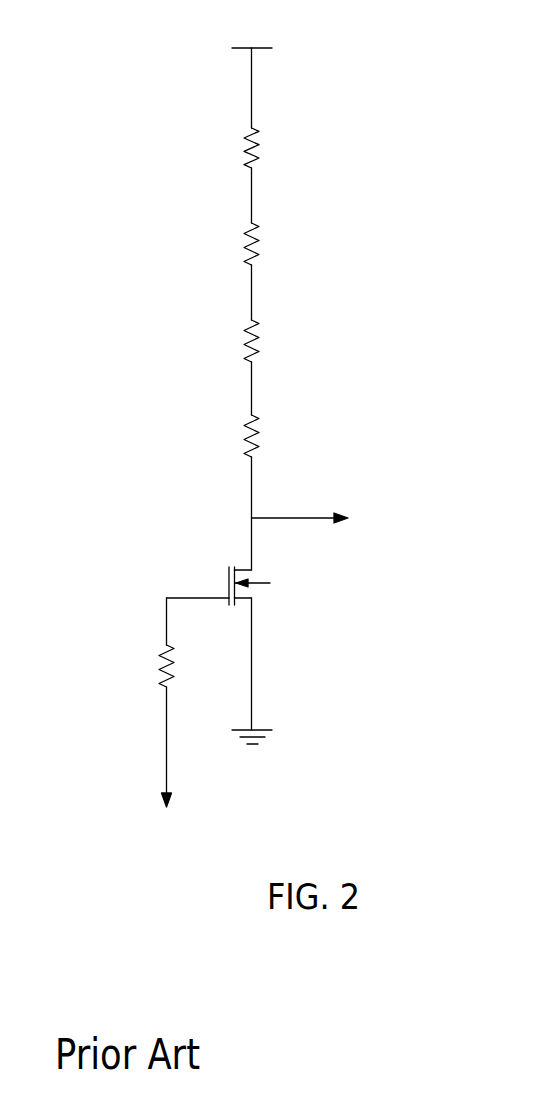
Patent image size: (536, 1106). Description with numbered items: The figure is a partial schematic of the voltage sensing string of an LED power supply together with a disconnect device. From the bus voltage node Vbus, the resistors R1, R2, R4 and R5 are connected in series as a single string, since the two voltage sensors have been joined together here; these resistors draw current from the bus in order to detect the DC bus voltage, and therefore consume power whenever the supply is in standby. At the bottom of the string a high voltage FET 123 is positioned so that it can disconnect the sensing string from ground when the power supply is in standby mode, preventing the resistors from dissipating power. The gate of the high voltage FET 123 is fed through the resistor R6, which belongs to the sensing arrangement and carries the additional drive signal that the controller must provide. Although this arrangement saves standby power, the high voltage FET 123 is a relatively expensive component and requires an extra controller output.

The bus voltage supply Vbus is at (252, 33).
The resistor R1 is at (238, 148).
The resistor R2 is at (238, 244).
The resistor R4 is at (238, 341).
The resistor R5 is at (238, 436).
The resistor R6 is at (154, 666).
The high voltage FET 123 is at (230, 571).